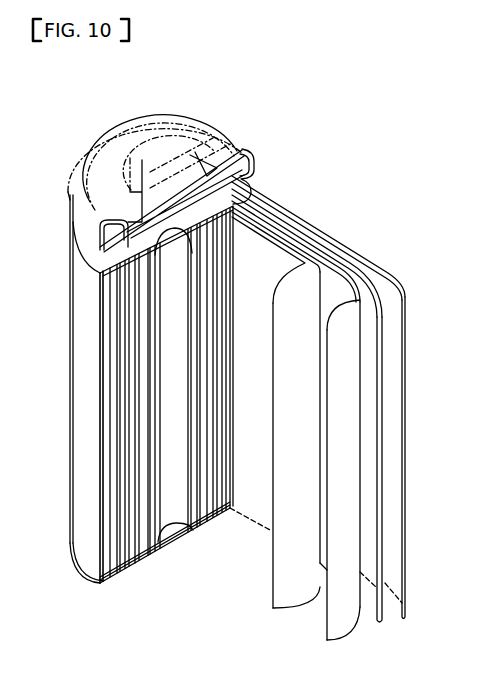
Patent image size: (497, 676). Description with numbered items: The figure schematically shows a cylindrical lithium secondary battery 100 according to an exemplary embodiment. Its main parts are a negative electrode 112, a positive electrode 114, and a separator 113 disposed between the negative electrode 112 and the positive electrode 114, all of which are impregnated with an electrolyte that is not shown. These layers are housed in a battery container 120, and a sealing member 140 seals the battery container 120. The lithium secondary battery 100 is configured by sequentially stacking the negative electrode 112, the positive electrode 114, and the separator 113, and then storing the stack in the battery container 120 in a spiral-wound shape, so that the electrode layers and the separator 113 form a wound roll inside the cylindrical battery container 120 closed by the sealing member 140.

The lithium secondary battery 100 is at (286, 118).
The negative electrode 112 is at (405, 303).
The separator 113 is at (302, 225).
The positive electrode 114 is at (343, 257).
The battery container 120 is at (77, 358).
The sealing member 140 is at (127, 148).